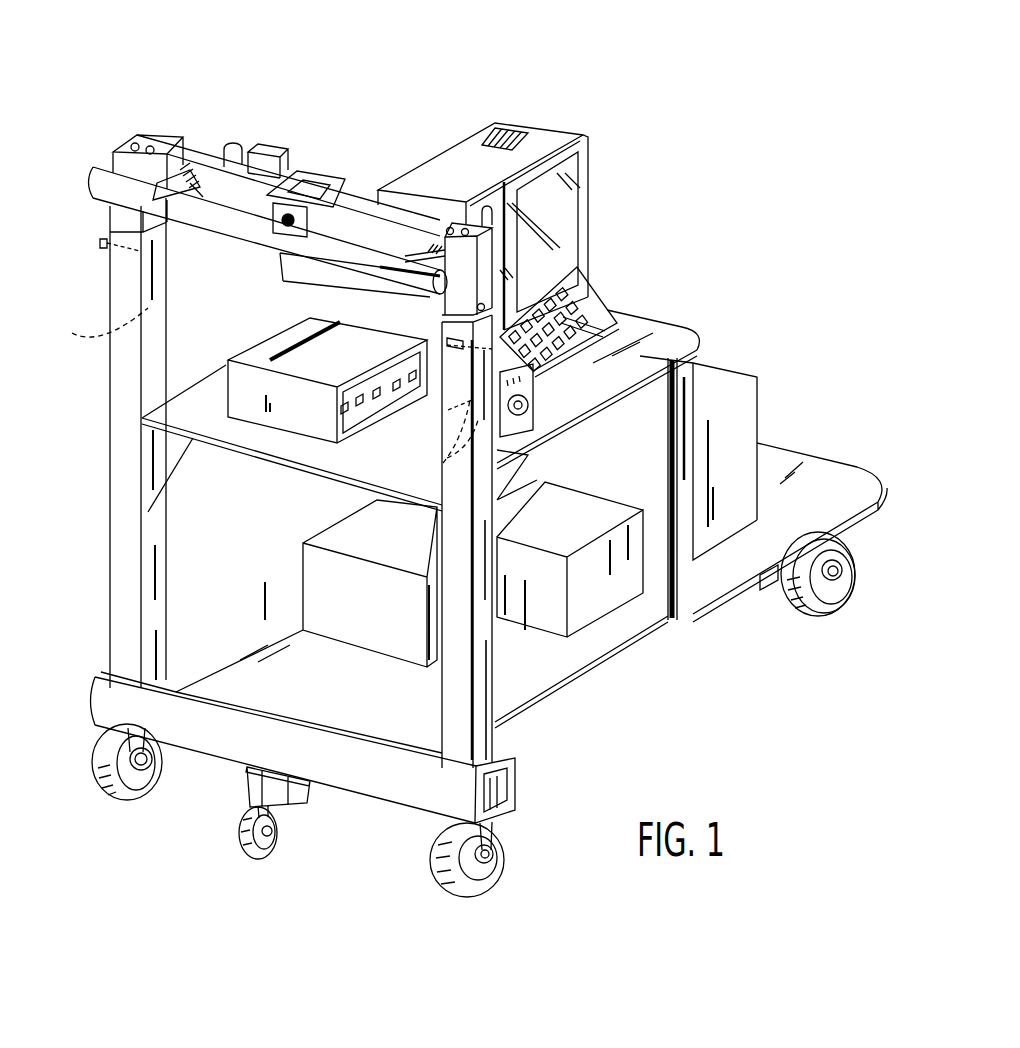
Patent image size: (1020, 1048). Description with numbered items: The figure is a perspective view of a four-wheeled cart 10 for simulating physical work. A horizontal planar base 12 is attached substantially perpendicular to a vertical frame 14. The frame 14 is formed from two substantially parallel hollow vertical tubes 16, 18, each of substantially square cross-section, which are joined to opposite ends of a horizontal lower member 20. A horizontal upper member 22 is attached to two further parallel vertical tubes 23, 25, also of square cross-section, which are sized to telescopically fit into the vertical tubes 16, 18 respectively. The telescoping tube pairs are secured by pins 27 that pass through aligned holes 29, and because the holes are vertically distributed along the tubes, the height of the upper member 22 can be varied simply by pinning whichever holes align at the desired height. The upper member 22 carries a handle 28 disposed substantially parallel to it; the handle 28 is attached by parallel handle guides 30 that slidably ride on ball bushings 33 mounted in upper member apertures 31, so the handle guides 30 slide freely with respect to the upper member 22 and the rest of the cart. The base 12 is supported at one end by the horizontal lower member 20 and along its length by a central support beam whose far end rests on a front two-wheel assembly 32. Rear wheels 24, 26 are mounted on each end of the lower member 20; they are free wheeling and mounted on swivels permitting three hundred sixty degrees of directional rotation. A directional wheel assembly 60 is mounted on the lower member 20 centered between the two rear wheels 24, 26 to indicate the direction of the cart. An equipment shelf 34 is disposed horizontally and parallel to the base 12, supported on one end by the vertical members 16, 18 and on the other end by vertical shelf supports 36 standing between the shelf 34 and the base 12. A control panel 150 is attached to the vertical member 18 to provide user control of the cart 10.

The four-wheeled cart 10 is at (584, 62).
The horizontal planar base 12 is at (587, 673).
The vertical frame 14 is at (93, 449).
The vertical tube 16 is at (108, 518).
The vertical tube 18 is at (483, 657).
The horizontal lower member 20 is at (190, 737).
The horizontal upper member 22 is at (165, 156).
The vertical tube 23 is at (106, 322).
The rear wheel 24 is at (112, 795).
The vertical tube 25 is at (446, 432).
The rear wheel 26 is at (430, 870).
The pin 27 is at (100, 242).
The handle 28 is at (222, 225).
The hole 29 is at (446, 458).
The handle guide 30 is at (233, 146).
The upper member aperture 31 is at (190, 185).
The front two-wheel assembly 32 is at (755, 619).
The ball bushing 33 is at (184, 168).
The equipment shelf 34 is at (672, 340).
The vertical shelf support 36 is at (683, 373).
The directional wheel assembly 60 is at (301, 820).
The control panel 150 is at (534, 385).